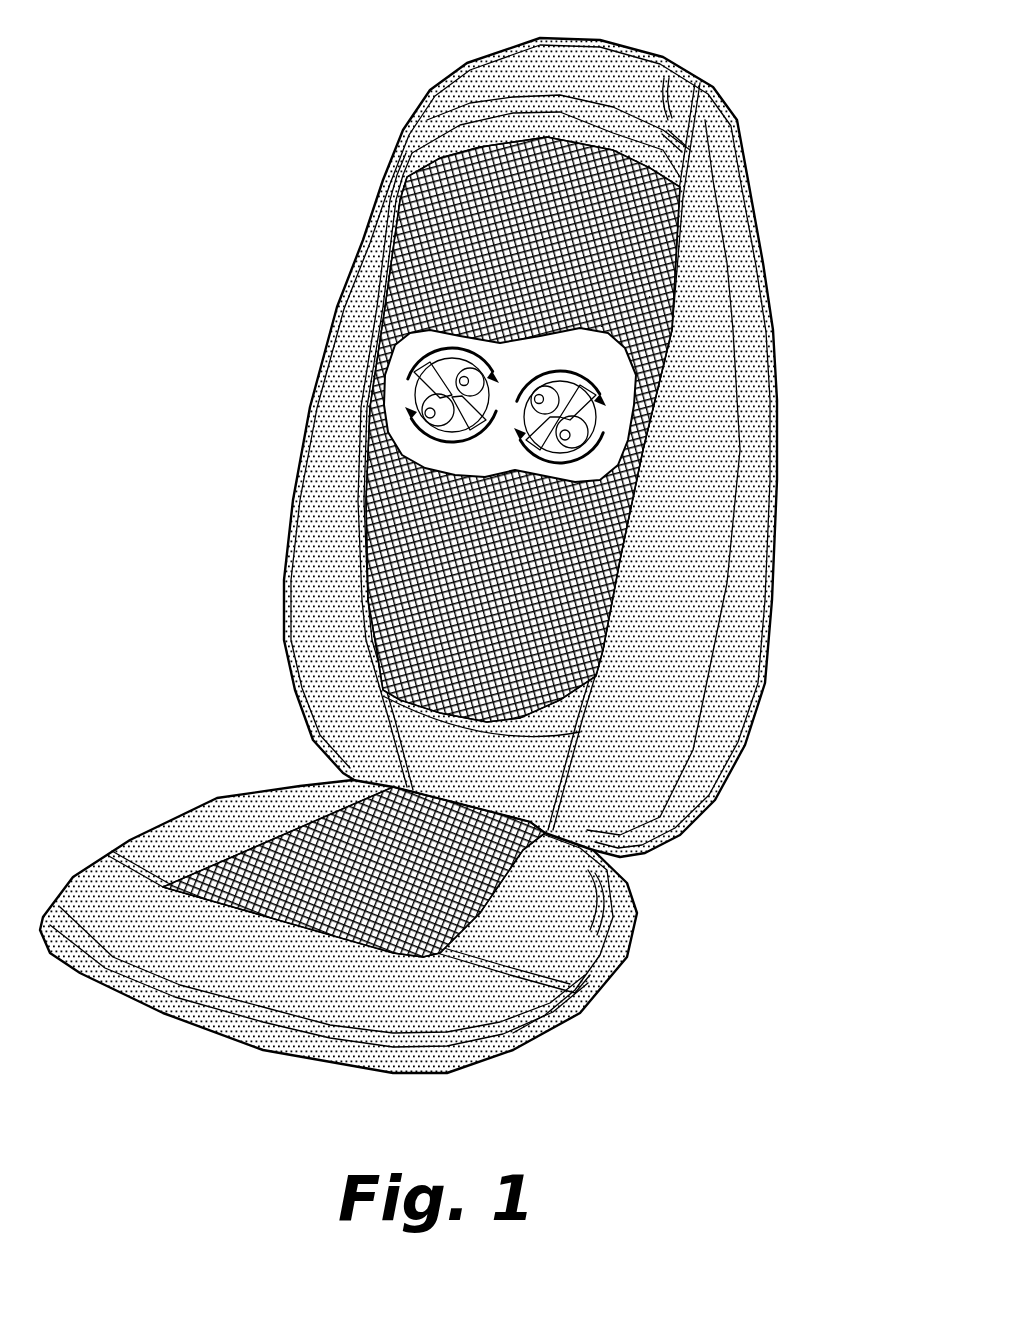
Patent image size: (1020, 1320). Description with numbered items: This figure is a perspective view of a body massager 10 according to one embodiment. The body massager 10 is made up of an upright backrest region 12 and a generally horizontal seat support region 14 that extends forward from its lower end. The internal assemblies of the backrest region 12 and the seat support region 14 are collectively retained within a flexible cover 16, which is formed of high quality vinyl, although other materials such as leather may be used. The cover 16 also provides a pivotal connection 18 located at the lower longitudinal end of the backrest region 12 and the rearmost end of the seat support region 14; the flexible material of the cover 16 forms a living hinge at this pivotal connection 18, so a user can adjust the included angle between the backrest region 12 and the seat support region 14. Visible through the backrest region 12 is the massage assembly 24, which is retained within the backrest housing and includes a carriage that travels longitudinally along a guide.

The body massager 10 is at (283, 237).
The backrest region 12 is at (373, 193).
The seat support region 14 is at (178, 812).
The flexible cover 16 is at (297, 437).
The pivotal connection 18 is at (613, 853).
The massage assembly 24 is at (423, 337).